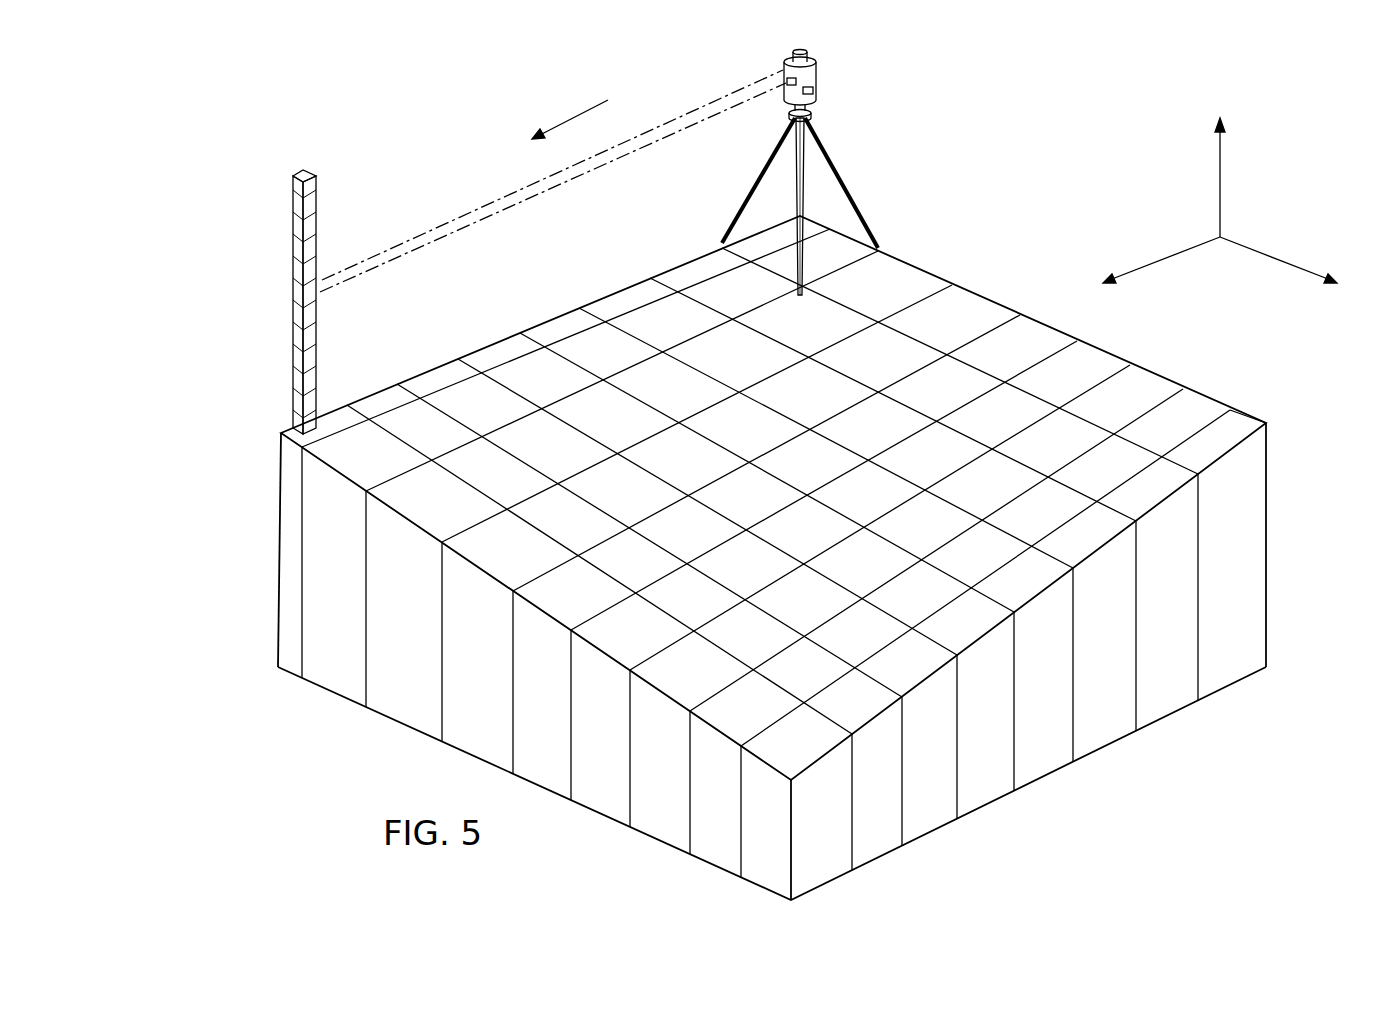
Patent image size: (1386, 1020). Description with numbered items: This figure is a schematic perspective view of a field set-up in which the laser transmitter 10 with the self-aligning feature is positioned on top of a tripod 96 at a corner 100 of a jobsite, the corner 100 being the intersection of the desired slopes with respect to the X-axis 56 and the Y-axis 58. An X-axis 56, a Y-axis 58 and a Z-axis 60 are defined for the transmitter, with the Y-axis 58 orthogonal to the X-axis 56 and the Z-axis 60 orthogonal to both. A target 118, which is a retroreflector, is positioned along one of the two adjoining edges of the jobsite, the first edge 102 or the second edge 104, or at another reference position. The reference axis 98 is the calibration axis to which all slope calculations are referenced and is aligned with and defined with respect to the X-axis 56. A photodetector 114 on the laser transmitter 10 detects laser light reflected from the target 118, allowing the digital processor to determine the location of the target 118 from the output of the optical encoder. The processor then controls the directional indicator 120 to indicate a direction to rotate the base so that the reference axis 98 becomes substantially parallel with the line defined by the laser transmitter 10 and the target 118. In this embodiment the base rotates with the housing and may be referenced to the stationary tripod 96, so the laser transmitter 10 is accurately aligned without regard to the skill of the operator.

The laser transmitter 10 is at (818, 80).
The X-axis 56 is at (1172, 244).
The Y-axis 58 is at (1272, 267).
The Z-axis 60 is at (1221, 174).
The tripod 96 is at (848, 170).
The reference axis 98 is at (602, 104).
The corner 100 is at (778, 212).
The first edge 102 is at (281, 433).
The second edge 104 is at (1256, 423).
The photodetector 114 is at (788, 85).
The target 118 is at (320, 176).
The directional indicator 120 is at (814, 92).